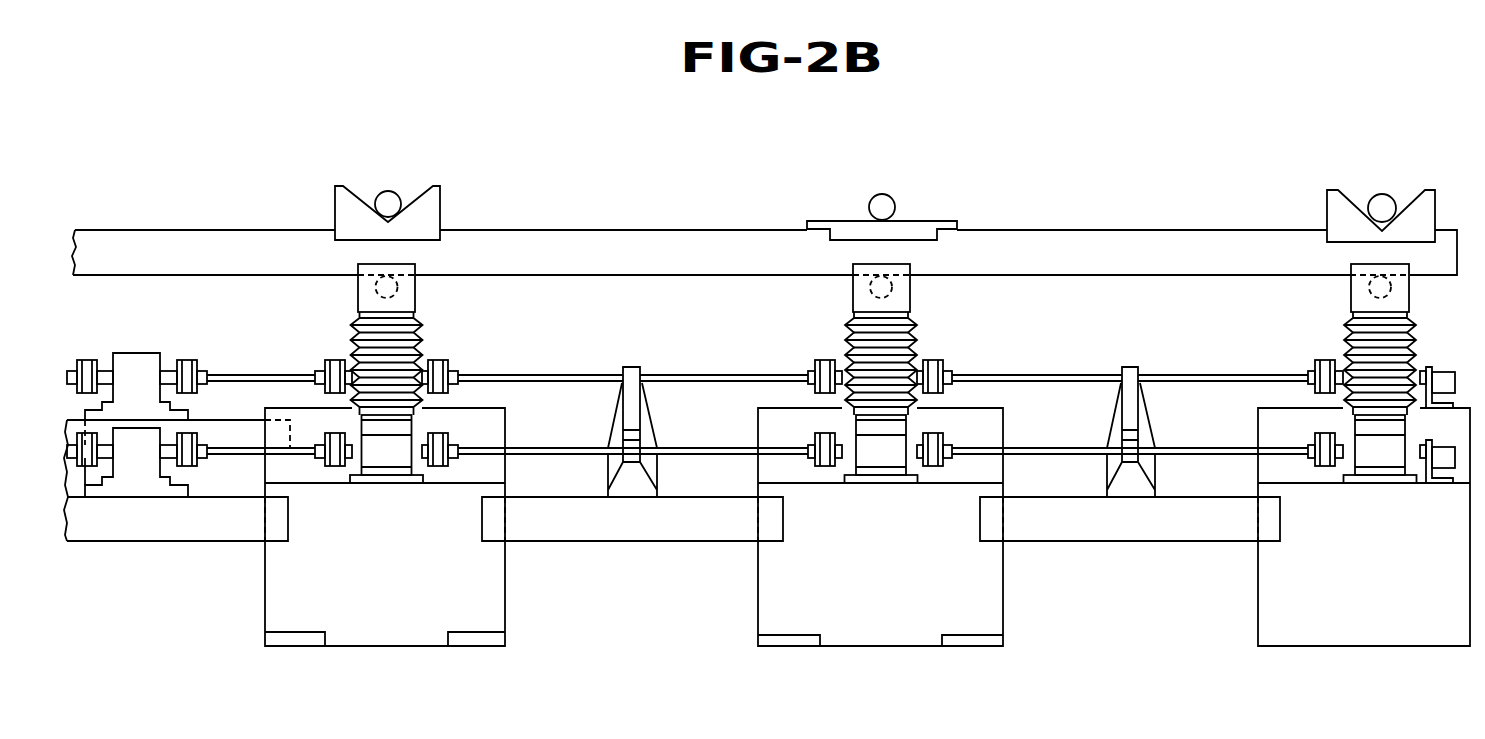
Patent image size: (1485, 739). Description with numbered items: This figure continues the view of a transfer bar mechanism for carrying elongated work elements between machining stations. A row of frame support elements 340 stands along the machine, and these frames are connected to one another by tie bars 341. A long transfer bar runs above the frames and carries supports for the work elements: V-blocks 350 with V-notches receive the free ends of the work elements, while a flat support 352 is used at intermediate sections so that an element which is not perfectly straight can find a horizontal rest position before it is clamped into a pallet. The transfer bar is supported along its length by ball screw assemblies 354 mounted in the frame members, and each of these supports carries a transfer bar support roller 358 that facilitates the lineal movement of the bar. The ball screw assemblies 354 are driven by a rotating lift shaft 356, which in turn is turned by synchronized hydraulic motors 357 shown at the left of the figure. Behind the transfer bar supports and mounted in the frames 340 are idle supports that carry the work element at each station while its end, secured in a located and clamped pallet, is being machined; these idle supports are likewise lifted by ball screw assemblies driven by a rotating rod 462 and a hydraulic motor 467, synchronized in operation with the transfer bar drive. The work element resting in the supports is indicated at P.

The frame support element 340 is at (400, 635).
The tie bar 341 is at (183, 527).
The V-block 350 is at (433, 207).
The flat support 352 is at (935, 228).
The ball screw assembly 354 is at (423, 340).
The rotating shaft 356 is at (723, 433).
The hydraulic motor 357 is at (142, 442).
The transfer bar support roller 358 is at (400, 289).
The rotating rod 462 is at (717, 375).
The hydraulic motor 467 is at (143, 362).
The workpiece P is at (386, 200).